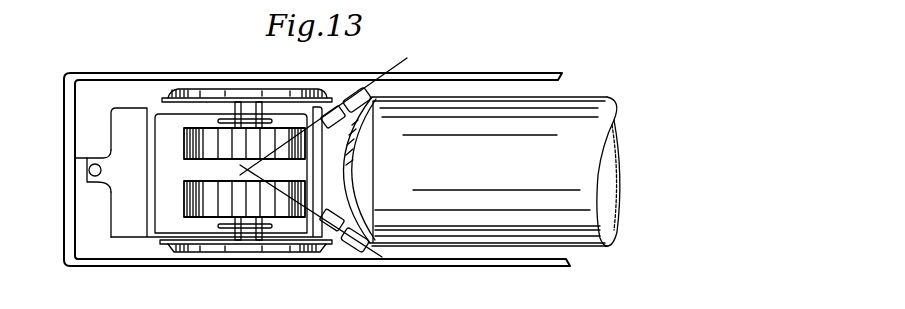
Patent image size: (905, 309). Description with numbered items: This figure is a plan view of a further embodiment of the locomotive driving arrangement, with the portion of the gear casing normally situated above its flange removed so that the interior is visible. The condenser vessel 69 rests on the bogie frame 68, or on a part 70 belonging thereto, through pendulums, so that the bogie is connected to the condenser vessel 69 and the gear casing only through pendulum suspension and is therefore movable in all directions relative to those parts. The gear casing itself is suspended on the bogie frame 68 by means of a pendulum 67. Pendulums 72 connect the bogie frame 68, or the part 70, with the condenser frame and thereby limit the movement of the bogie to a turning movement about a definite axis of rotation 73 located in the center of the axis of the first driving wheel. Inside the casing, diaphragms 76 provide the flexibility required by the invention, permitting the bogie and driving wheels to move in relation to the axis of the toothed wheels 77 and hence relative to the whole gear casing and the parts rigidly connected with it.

The pendulum 67 is at (92, 172).
The bogie frame 68 is at (100, 78).
The condenser vessel 69 is at (481, 171).
The part belonging to the bogie frame 70 is at (333, 178).
The pendulums 72 is at (392, 282).
The axis of rotation 73 is at (248, 163).
The diaphragms 76 is at (227, 118).
The toothed wheels 77 is at (193, 147).